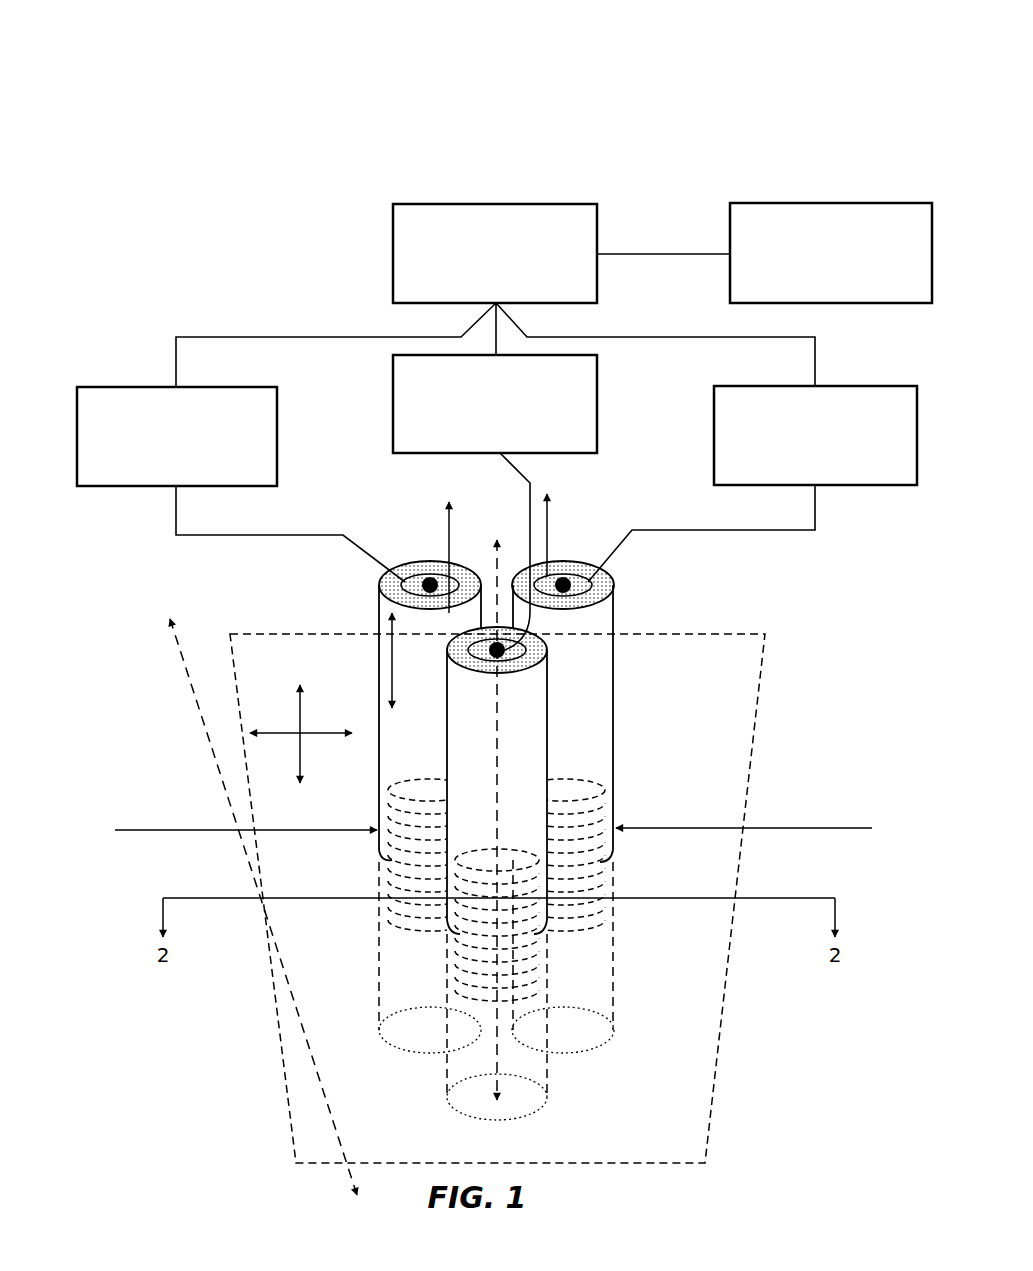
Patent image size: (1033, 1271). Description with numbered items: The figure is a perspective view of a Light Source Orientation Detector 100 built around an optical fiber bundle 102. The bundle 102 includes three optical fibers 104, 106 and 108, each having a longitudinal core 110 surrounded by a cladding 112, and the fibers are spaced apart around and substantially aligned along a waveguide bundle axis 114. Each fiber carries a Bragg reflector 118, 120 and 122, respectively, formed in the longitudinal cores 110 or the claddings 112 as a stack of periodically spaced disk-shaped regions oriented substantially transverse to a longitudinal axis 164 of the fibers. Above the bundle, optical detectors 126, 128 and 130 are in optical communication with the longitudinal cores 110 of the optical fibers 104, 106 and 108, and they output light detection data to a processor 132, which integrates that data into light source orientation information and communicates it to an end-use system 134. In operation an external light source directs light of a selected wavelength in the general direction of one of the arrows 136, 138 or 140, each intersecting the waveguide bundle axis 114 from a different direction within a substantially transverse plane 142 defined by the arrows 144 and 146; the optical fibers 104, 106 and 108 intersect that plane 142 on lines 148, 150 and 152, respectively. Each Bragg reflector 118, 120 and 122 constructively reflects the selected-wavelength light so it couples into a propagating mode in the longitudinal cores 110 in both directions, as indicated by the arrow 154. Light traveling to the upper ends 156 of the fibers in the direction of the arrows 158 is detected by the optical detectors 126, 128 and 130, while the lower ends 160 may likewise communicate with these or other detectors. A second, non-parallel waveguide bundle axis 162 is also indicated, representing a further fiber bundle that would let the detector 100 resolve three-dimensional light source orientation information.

The Light Source Orientation Detector 100 is at (749, 150).
The optical fiber bundle 102 is at (636, 732).
The optical fiber 104 is at (430, 807).
The optical fiber 106 is at (497, 873).
The optical fiber 108 is at (563, 807).
The longitudinal core 110 is at (592, 578).
The cladding 112 is at (598, 594).
The waveguide bundle axis 114 is at (497, 804).
The Bragg reflector 118 is at (400, 917).
The Bragg reflector 120 is at (548, 957).
The Bragg reflector 122 is at (586, 918).
The optical detector 126 is at (241, 484).
The optical detector 128 is at (495, 502).
The optical detector 130 is at (752, 484).
The processor 132 is at (495, 295).
The end-use system 134 is at (831, 253).
The arrow 136 is at (225, 831).
The arrow 138 is at (512, 929).
The arrow 140 is at (770, 829).
The substantially transverse plane 142 is at (497, 898).
The arrow 144 is at (297, 720).
The arrow 146 is at (299, 722).
The line 148 is at (390, 859).
The line 150 is at (488, 945).
The line 152 is at (606, 890).
The arrow 154 is at (414, 660).
The upper ends 156 is at (587, 545).
The arrows 158 is at (500, 536).
The lower ends 160 is at (420, 1040).
The waveguide bundle axis 162 is at (254, 894).
The longitudinal axis 164 is at (428, 578).